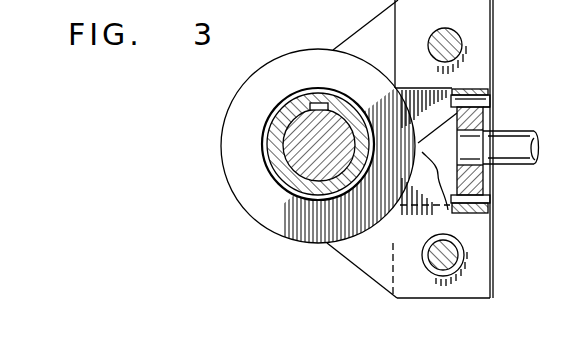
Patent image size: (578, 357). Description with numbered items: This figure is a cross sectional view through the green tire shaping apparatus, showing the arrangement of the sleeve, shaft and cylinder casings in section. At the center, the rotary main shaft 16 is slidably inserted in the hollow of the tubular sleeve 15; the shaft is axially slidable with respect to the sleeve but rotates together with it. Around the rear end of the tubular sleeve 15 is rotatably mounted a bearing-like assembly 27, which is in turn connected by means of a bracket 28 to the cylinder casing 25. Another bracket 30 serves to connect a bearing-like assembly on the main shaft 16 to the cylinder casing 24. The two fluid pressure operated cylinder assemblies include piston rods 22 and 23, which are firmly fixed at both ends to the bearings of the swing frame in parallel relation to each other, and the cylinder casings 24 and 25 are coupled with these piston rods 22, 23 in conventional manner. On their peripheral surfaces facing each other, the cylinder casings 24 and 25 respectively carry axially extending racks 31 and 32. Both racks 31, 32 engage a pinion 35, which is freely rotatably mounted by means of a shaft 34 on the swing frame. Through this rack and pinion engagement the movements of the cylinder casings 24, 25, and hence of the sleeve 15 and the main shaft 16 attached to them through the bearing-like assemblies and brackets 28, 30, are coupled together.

The tubular sleeve 15 is at (283, 180).
The rotary main shaft 16 is at (287, 145).
The piston rod 22 is at (455, 48).
The piston rod 23 is at (452, 256).
The cylinder casing 24 is at (483, 12).
The cylinder casing 25 is at (481, 295).
The bearing-like assembly 27 is at (255, 82).
The bracket 28 is at (367, 260).
The bracket 30 is at (357, 32).
The rack 31 is at (490, 101).
The rack 32 is at (490, 200).
The shaft 34 is at (527, 133).
The pinion 35 is at (481, 178).